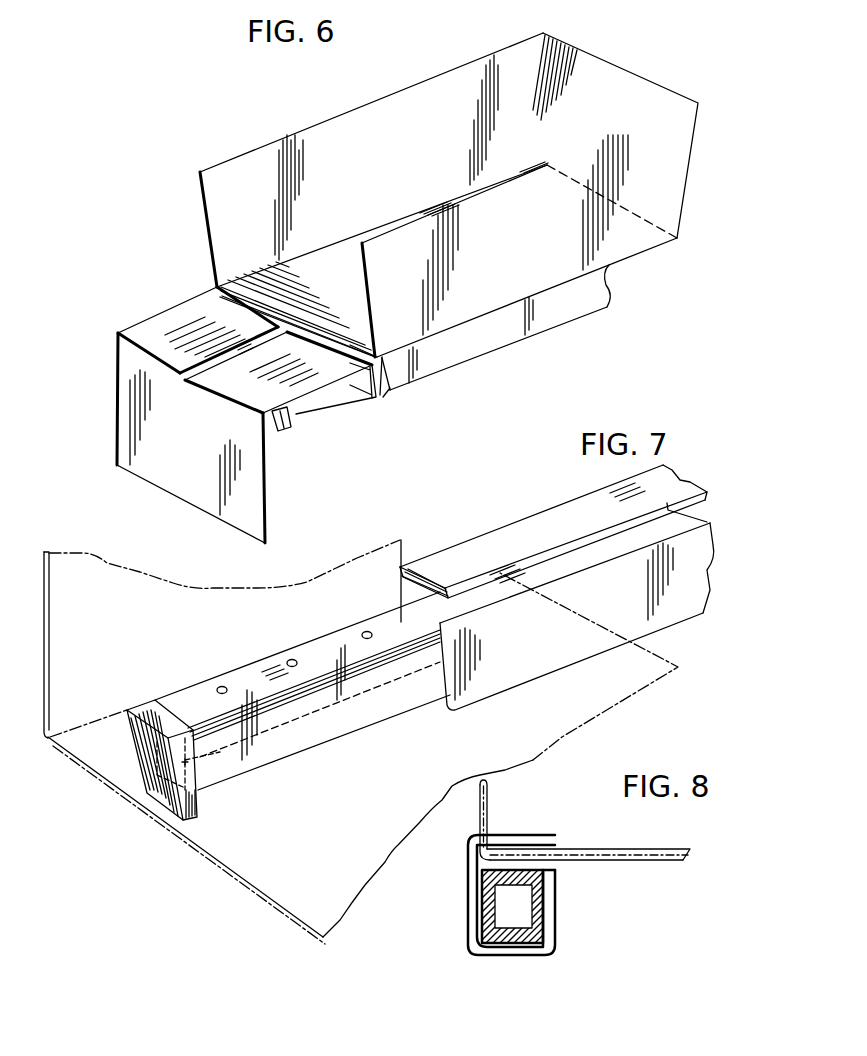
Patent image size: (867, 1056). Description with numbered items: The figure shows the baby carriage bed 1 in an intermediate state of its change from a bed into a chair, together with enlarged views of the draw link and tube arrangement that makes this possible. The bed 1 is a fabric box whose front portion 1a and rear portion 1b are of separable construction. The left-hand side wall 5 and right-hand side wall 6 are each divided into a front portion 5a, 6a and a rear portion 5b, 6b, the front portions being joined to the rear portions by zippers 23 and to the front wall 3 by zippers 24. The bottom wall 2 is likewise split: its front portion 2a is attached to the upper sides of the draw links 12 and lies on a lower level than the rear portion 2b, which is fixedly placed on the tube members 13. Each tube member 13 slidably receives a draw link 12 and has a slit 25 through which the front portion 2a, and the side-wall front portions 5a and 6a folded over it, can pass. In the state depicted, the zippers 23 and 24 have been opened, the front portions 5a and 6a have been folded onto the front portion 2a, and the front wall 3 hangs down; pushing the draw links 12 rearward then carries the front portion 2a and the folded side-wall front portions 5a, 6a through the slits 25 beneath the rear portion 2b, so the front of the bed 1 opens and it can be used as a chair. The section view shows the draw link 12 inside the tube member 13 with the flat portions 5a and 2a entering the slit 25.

In FIG. 6, the baby carriage bed 1 is at (612, 48).
In FIG. 6, the front portion of the bed 1a is at (182, 394).
In FIG. 6, the rear portion of the bed 1b is at (328, 105).
In FIG. 6, the bottom wall 2 is at (330, 262).
In FIG. 6, the front portion of the bottom wall 2a is at (242, 348).
In FIG. 7, the front portion of the bottom wall 2a is at (240, 860).
In FIG. 8, the front portion of the bottom wall 2a is at (660, 866).
In FIG. 6, the rear portion of the bottom wall 2b is at (391, 220).
In FIG. 6, the front wall 3 is at (132, 432).
In FIG. 6, the left-hand side wall 5 is at (244, 187).
In FIG. 6, the front portion of the left-hand side wall 5a is at (174, 316).
In FIG. 7, the front portion of the left-hand side wall 5a is at (112, 588).
In FIG. 8, the front portion of the left-hand side wall 5a is at (488, 806).
In FIG. 6, the rear portion of the left-hand side wall 5b is at (272, 155).
In FIG. 6, the right-hand side wall 6 is at (478, 307).
In FIG. 6, the front portion of the right-hand side wall 6a is at (310, 382).
In FIG. 6, the rear portion of the right-hand side wall 6b is at (541, 274).
In FIG. 6, the draw link 12 is at (297, 412).
In FIG. 7, the draw link 12 is at (280, 750).
In FIG. 8, the draw link 12 is at (542, 906).
In FIG. 6, the tube member 13 is at (455, 352).
In FIG. 7, the tube member 13 is at (546, 521).
In FIG. 8, the tube member 13 is at (529, 950).
In FIG. 6, the zipper 23 is at (217, 284).
In FIG. 6, the zipper 24 is at (115, 375).
In FIG. 7, the slit 25 is at (690, 517).
In FIG. 8, the slit 25 is at (575, 851).